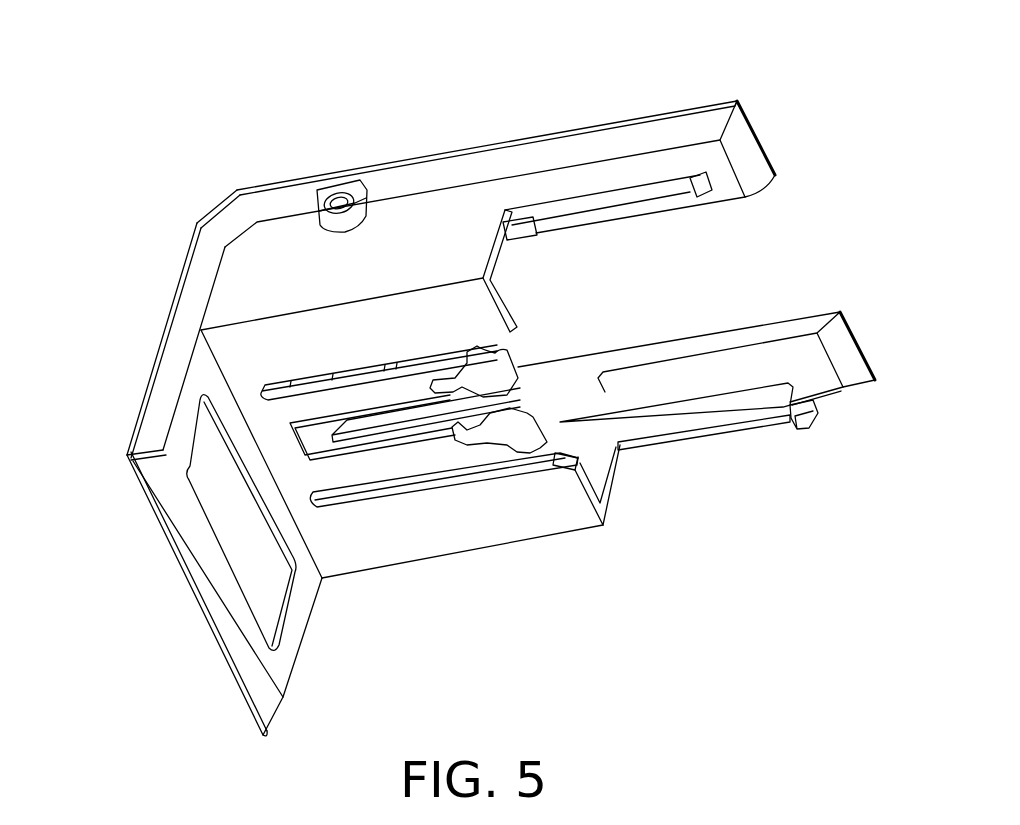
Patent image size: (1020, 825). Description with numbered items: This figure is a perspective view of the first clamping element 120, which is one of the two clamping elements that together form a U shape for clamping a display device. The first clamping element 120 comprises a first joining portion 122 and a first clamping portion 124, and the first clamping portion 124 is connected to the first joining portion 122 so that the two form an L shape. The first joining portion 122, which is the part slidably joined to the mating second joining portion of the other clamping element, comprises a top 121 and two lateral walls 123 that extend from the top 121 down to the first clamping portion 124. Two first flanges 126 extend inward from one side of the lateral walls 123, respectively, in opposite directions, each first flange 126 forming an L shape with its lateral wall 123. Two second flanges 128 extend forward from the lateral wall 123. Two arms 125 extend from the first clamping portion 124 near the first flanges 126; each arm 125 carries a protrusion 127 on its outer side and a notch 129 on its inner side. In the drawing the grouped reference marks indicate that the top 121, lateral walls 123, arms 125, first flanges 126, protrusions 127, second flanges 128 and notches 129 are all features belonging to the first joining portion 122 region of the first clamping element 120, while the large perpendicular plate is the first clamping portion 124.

The first clamping element 120 is at (93, 36).
The top 121 is at (612, 122).
The first joining portion 122 is at (895, 48).
The lateral walls 123 is at (493, 282).
The first clamping portion 124 is at (186, 318).
The arms 125 is at (521, 342).
The first flanges 126 is at (501, 292).
The protrusion 127 is at (511, 331).
The second flanges 128 is at (637, 170).
The notch 129 is at (620, 358).